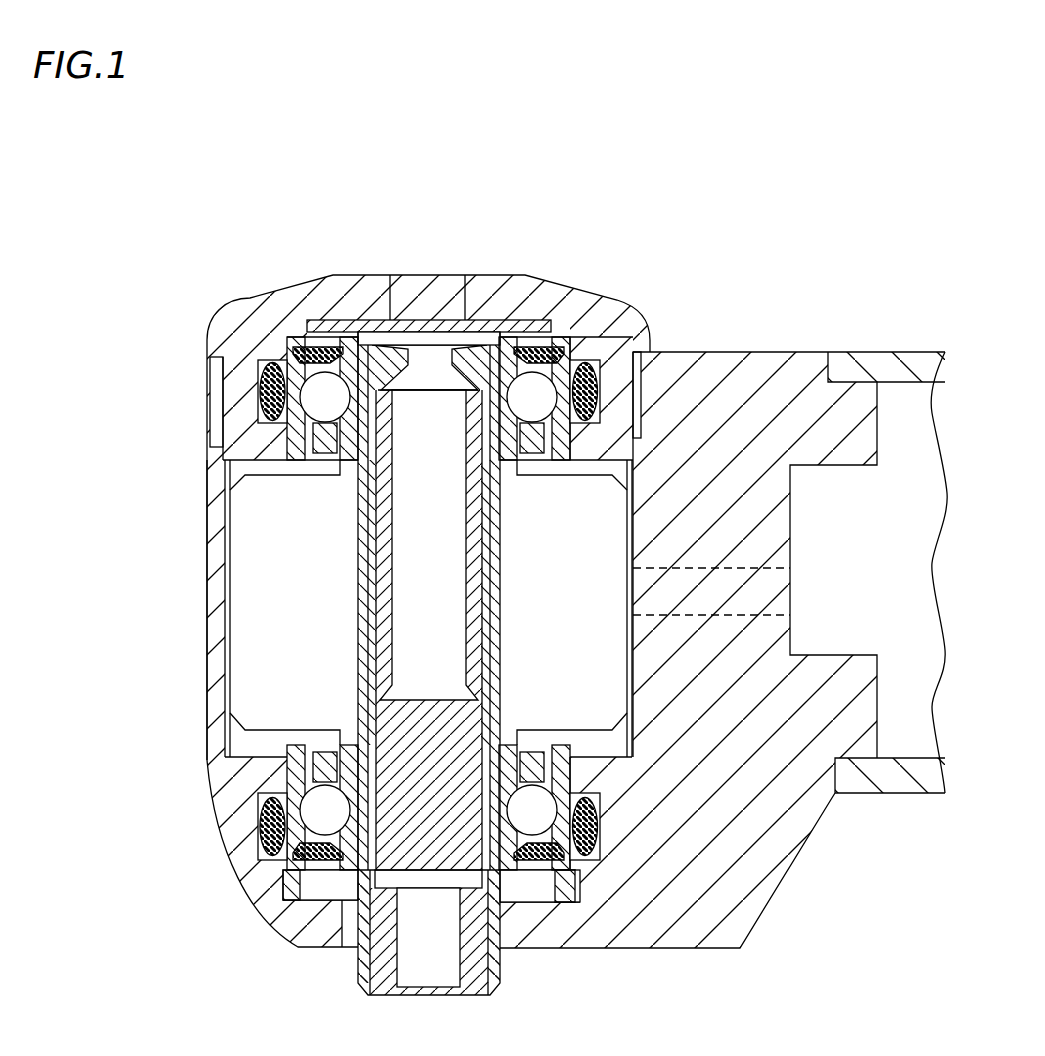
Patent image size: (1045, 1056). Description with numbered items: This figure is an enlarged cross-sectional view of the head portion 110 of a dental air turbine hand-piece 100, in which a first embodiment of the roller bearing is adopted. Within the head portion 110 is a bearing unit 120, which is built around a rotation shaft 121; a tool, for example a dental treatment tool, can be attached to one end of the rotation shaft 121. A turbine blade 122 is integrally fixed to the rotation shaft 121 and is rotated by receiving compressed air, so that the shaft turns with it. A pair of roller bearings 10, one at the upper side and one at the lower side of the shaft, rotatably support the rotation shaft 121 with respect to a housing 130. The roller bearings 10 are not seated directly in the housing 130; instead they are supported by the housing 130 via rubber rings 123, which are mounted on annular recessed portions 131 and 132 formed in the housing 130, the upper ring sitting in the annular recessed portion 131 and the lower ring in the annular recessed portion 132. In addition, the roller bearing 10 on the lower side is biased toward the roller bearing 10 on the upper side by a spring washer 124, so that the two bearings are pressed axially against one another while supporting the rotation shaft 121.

The dental air turbine hand-piece 100 is at (531, 575).
The head portion 110 is at (245, 295).
The roller bearing 10 is at (328, 325).
The annular recessed portion 131 is at (586, 356).
The annular recessed portion 132 is at (582, 870).
The rubber ring 123 is at (263, 385).
The rotation shaft 121 is at (365, 527).
The bearing unit 120 is at (222, 603).
The turbine blade 122 is at (263, 643).
The housing 130 is at (216, 692).
The spring washer 124 is at (302, 880).